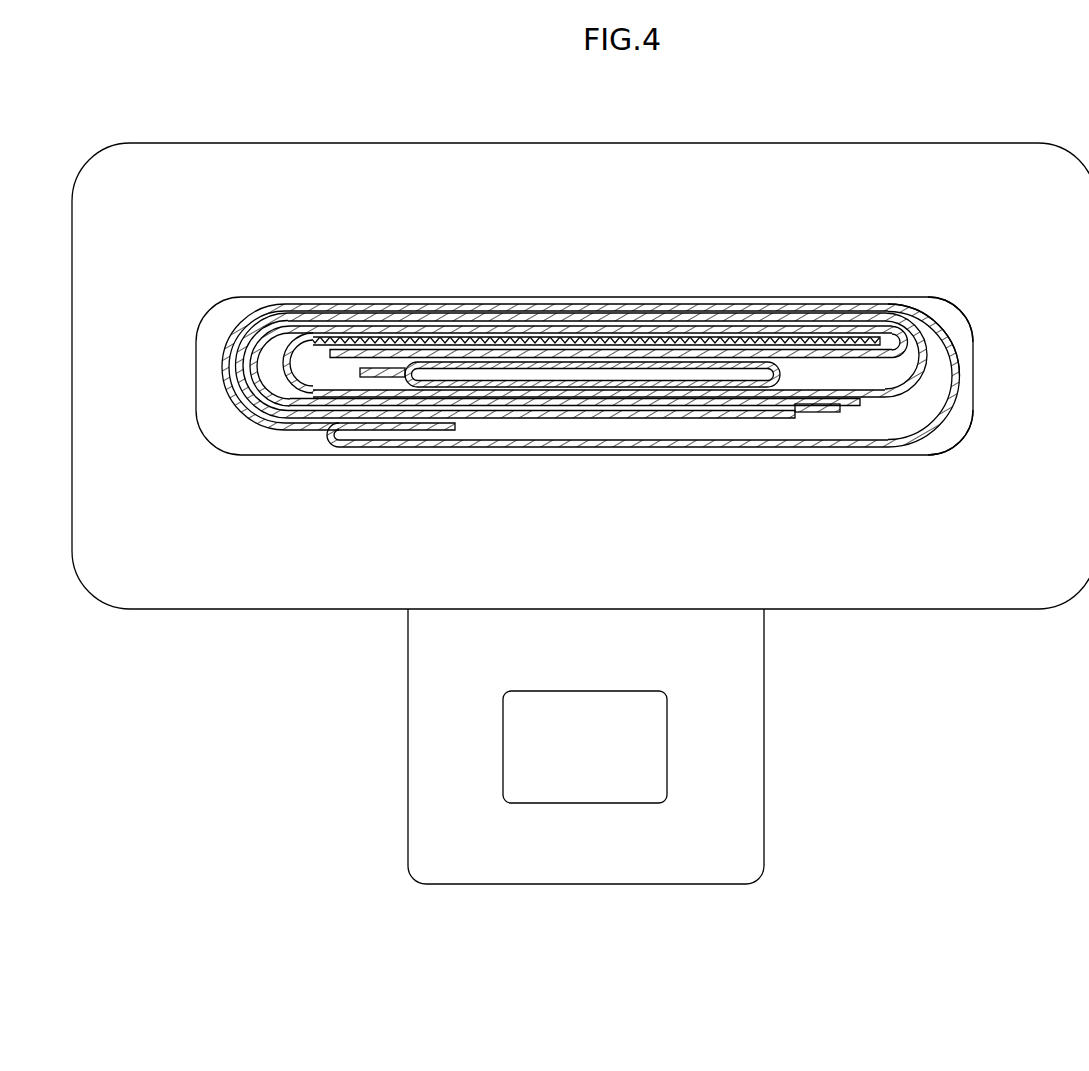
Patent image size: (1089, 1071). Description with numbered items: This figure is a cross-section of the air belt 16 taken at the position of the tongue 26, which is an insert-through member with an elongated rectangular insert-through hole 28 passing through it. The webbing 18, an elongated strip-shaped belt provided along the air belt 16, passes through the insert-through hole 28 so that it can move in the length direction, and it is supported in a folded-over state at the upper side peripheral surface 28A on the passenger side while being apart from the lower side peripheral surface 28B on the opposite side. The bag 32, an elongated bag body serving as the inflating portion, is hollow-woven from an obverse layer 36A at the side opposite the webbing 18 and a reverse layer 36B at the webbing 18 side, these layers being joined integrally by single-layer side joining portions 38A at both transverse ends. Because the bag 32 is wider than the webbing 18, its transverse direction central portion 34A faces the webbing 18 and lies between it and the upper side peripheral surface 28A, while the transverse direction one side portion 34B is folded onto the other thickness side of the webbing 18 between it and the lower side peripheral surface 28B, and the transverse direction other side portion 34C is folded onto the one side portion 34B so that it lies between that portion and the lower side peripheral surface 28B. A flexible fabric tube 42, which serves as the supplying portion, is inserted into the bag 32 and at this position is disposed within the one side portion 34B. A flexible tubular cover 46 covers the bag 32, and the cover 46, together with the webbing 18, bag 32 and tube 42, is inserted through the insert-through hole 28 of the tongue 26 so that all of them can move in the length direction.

The tongue 26 is at (312, 143).
The insert-through hole 28 is at (196, 372).
The upper side peripheral surface 28A is at (912, 300).
The lower side peripheral surface 28B is at (906, 455).
The air belt 16 is at (231, 324).
The webbing 18 is at (325, 340).
The obverse layer 36A is at (947, 398).
The reverse layer 36B is at (403, 333).
The transverse direction central portion 34A is at (590, 318).
The transverse direction one side portion 34B is at (862, 400).
The transverse direction other side portion 34C is at (580, 420).
The side joining portions 38A is at (370, 371).
The tube 42 is at (790, 376).
The cover 46 is at (962, 322).
The bag 32 is at (930, 358).